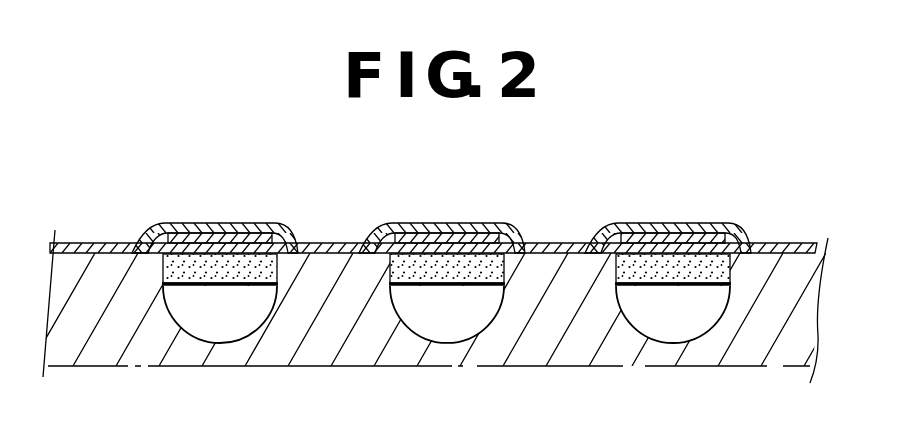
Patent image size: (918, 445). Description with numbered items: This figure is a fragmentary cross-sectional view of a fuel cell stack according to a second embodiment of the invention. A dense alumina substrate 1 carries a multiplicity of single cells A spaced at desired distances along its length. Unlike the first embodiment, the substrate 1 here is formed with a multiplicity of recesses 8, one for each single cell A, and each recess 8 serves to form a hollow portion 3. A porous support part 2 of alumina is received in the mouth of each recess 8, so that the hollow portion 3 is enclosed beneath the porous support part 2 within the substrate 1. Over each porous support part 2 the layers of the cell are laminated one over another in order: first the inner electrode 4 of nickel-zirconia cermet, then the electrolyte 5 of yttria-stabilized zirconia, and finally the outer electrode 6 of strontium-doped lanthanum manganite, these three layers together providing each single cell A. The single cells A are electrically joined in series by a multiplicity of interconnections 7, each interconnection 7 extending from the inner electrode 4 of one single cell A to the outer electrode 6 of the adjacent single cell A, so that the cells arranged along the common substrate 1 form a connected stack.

The substrate 1 is at (768, 333).
The porous support part 2 is at (614, 256).
The hollow portion 3 is at (703, 312).
The inner electrode 4 is at (633, 268).
The electrolyte 5 is at (744, 236).
The outer electrode 6 is at (687, 223).
The interconnection 7 is at (530, 248).
The recess 8 is at (656, 320).
The single cell A is at (464, 200).